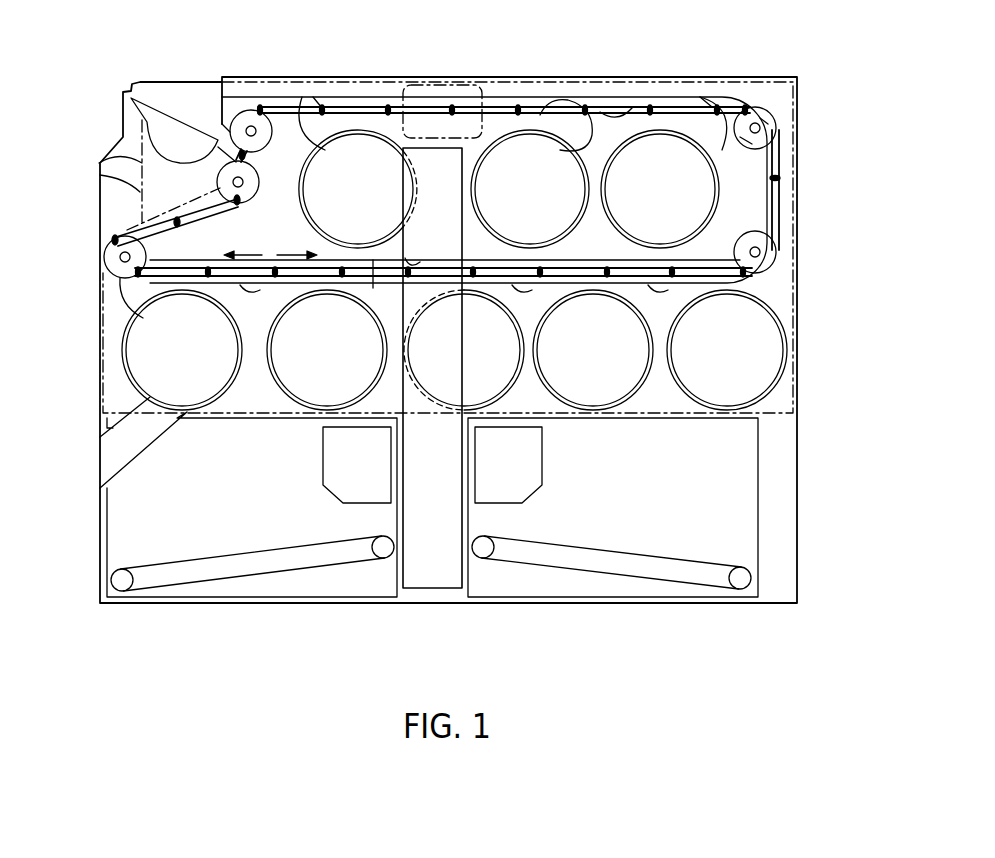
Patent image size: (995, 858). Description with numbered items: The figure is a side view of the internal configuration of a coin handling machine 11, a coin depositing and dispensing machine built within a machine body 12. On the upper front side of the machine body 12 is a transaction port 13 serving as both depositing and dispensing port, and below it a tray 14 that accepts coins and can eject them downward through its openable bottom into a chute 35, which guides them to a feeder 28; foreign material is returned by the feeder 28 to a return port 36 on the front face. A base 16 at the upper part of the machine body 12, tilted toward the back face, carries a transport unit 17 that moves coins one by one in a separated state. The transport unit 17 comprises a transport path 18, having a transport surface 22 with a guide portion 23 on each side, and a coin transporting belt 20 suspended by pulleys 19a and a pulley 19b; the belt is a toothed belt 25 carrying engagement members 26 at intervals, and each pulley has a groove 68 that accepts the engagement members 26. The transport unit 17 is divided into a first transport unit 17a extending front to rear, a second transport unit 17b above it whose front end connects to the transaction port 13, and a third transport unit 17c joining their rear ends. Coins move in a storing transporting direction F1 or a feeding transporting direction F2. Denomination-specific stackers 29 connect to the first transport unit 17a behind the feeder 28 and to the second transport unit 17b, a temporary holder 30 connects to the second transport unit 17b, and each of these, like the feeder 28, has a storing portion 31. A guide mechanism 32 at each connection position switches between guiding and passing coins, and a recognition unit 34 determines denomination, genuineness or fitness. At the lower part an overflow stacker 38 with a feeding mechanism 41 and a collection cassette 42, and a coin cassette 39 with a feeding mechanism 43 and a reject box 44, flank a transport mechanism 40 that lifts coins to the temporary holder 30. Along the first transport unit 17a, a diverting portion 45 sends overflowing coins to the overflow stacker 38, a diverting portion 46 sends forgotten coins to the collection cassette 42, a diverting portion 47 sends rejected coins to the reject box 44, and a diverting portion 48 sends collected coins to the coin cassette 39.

The coin handling machine 11 is at (113, 48).
The machine body 12 is at (99, 204).
The transaction port 13 is at (178, 90).
The tray 14 is at (112, 160).
The base 16 is at (105, 278).
The transport unit 17 is at (478, 158).
The first transport unit 17a is at (186, 270).
The second transport unit 17b is at (265, 110).
The third transport unit 17c is at (785, 145).
The transport path 18 is at (678, 98).
The pulleys 19a is at (240, 112).
The pulley 19b is at (132, 117).
The coin transporting belt 20 is at (532, 110).
The transport surface 22 is at (575, 100).
The guide portion 23 is at (547, 100).
The toothed belt 25 is at (610, 110).
The engagement members 26 is at (650, 106).
The feeder 28 is at (230, 376).
The denomination-specific stackers 29 is at (583, 210).
The temporary holder 30 is at (298, 198).
The storing portion 31 is at (360, 132).
The guide mechanism 32 is at (307, 110).
The recognition unit 34 is at (440, 84).
The chute 35 is at (100, 175).
The return port 36 is at (100, 460).
The overflow stacker 38 is at (110, 582).
The coin cassette 39 is at (760, 508).
The transport mechanism 40 is at (433, 573).
The feeding mechanism 41 is at (224, 588).
The collection cassette 42 is at (357, 493).
The feeding mechanism 43 is at (607, 550).
The reject box 44 is at (517, 493).
The diverting portion 45 is at (232, 282).
The diverting portion 46 is at (370, 282).
The diverting portion 47 is at (497, 280).
The diverting portion 48 is at (630, 280).
The groove 68 is at (752, 141).
The storing transporting direction F1 is at (243, 243).
The feeding transporting direction F2 is at (297, 243).